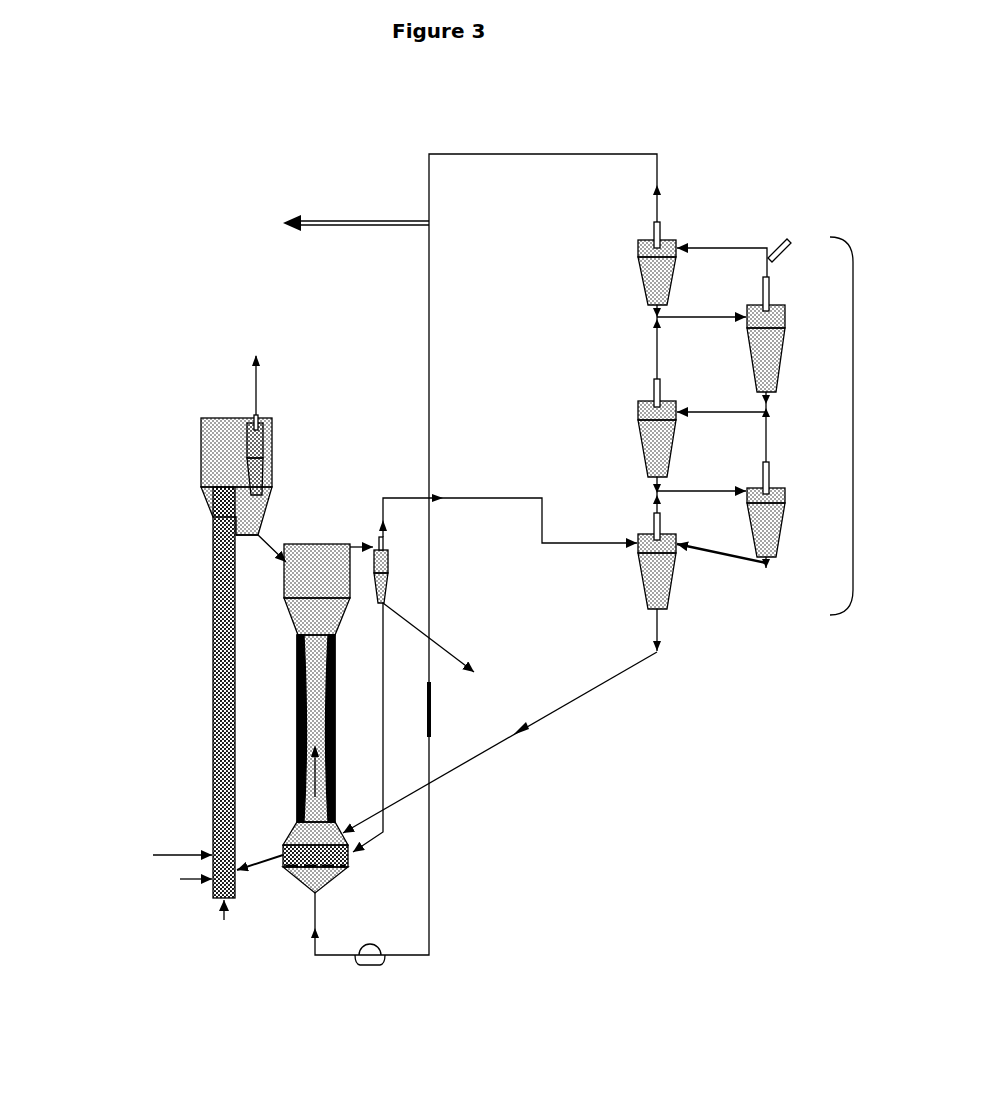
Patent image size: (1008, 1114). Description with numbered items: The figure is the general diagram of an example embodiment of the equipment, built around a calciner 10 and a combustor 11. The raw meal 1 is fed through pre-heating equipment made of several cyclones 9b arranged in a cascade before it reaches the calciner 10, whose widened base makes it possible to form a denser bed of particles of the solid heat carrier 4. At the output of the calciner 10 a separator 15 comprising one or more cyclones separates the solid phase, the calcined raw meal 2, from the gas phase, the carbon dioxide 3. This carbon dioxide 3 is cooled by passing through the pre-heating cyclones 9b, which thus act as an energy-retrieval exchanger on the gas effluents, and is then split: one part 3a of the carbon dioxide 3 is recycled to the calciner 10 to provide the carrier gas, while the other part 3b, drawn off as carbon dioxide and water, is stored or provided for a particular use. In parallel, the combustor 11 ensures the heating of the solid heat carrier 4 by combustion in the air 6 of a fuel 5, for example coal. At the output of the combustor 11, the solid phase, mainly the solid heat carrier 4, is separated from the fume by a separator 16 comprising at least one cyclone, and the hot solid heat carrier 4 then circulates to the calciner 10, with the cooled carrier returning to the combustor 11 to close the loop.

The raw meal 1 is at (577, 518).
The calcined raw meal 2 is at (438, 647).
The carbon dioxide 3 is at (529, 353).
The recycled part of the carbon dioxide 3a is at (486, 559).
The stored part of the carbon dioxide 3b is at (317, 207).
The solid heat carrier 4 is at (210, 709).
The fuel 5 is at (186, 880).
The air 6 is at (224, 922).
The cyclones 9b is at (763, 418).
The calciner 10 is at (336, 755).
The combustor 11 is at (213, 653).
The separator 15 is at (388, 560).
The separator 16 is at (247, 443).